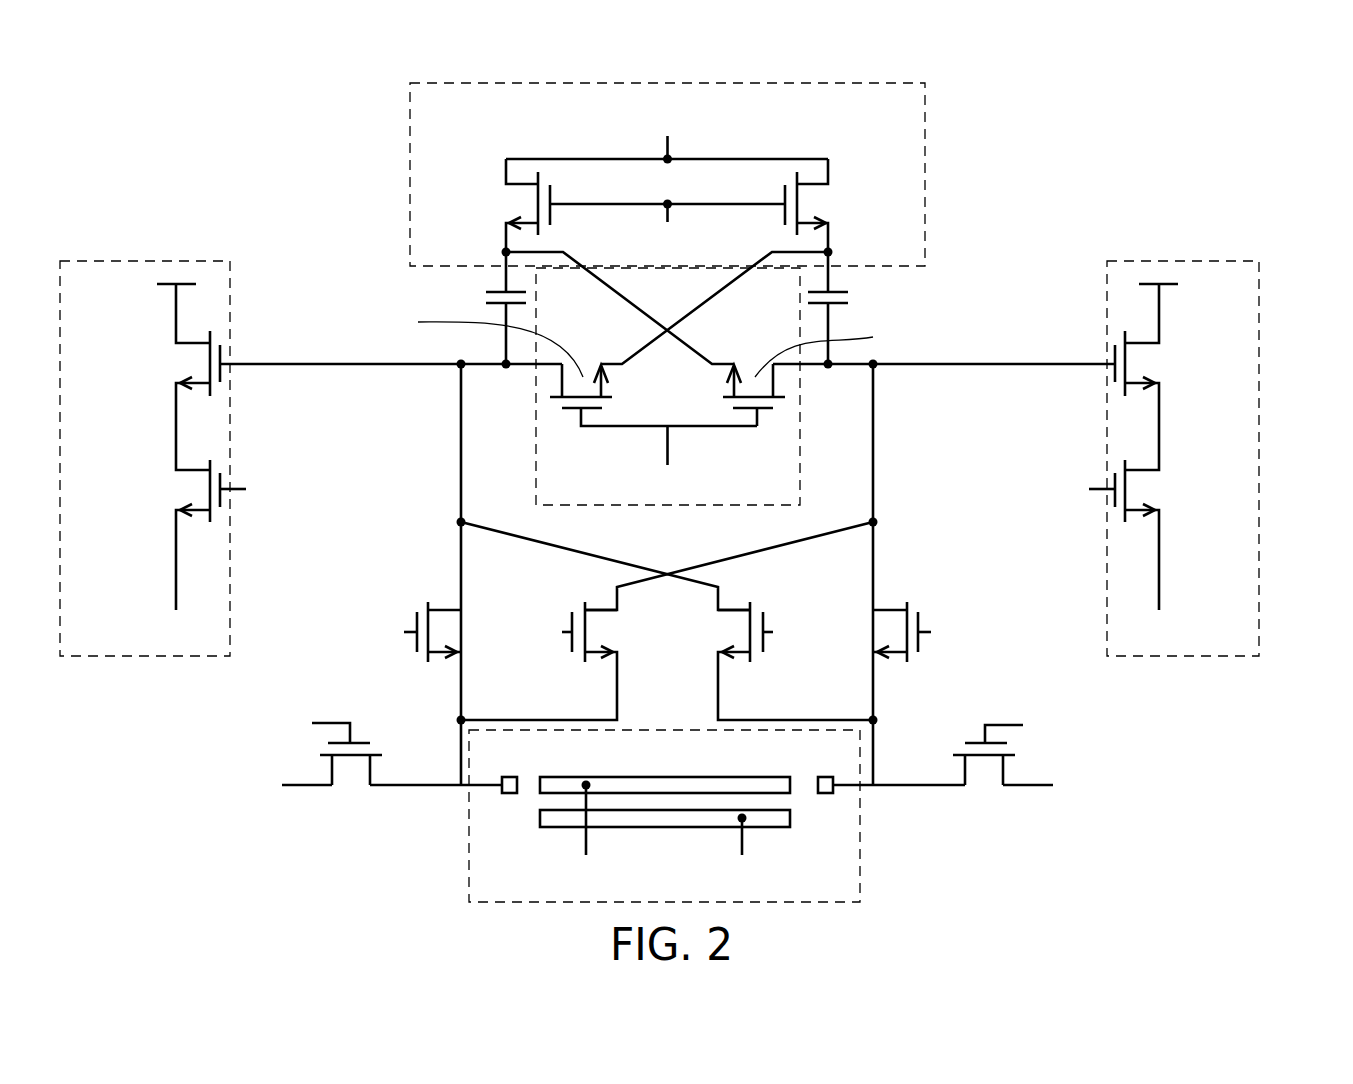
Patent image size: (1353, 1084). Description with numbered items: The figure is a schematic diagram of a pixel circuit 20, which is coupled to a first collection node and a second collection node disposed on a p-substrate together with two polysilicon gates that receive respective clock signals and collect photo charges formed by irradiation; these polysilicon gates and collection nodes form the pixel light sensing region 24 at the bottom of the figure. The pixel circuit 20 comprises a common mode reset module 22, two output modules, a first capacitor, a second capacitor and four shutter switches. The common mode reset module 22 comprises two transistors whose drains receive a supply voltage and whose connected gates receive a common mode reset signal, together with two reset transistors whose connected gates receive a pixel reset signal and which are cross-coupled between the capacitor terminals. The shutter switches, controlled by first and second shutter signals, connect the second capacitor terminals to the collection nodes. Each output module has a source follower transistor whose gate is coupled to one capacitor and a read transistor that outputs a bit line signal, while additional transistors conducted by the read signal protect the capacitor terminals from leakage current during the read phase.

The pixel circuit 20 is at (1212, 135).
The common mode reset (CMR) module 22 is at (410, 178).
The photodiode / poly gate structure 24 is at (469, 852).